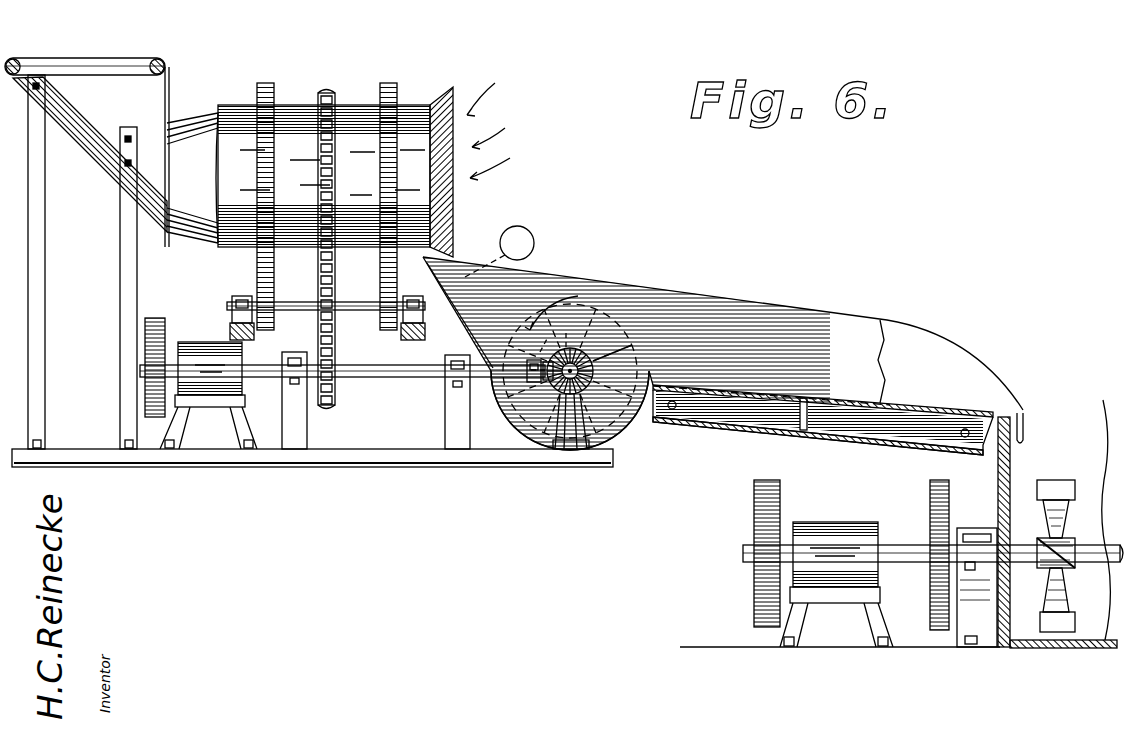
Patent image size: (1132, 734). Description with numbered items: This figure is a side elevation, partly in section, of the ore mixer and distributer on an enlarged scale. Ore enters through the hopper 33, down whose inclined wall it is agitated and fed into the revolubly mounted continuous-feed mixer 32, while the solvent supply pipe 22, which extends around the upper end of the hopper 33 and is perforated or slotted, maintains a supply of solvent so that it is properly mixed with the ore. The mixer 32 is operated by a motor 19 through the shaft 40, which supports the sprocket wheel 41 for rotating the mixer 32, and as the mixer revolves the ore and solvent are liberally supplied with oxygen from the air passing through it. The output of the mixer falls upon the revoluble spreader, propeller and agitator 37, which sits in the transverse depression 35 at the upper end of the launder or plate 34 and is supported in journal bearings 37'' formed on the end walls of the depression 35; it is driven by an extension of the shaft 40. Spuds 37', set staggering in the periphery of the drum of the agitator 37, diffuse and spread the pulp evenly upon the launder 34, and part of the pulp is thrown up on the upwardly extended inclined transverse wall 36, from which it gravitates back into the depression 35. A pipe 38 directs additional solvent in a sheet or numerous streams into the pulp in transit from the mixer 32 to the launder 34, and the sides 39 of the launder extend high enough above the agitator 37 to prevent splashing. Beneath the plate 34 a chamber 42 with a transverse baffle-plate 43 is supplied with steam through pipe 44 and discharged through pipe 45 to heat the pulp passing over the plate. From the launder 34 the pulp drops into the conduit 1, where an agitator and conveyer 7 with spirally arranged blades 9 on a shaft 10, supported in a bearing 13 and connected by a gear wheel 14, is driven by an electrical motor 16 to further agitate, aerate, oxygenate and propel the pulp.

The conduit 1 is at (1087, 414).
The agitator and conveyer 7 is at (1068, 541).
The vanes or blades 9 is at (1058, 481).
The shaft 10 is at (1026, 567).
The bearing 13 is at (976, 523).
The gear wheel 14 is at (922, 532).
The electrical motor 16 is at (841, 519).
The motor 19 is at (214, 340).
The solvent supply pipe 22 is at (76, 60).
The continuous-feed mixer 32 is at (233, 243).
The hopper 33 is at (168, 98).
The launder or plate 34 is at (922, 402).
The transverse depression 35 is at (614, 418).
The inclined transverse wall 36 is at (461, 322).
The spreader, propeller and agitator 37 is at (570, 339).
The spuds 37' is at (640, 304).
The journal bearings 37'' is at (553, 448).
The pipe 38 is at (526, 232).
The sides 39 is at (742, 312).
The shaft 40 is at (392, 372).
The sprocket wheel 41 is at (338, 298).
The chamber 42 is at (754, 418).
The transverse baffle-plate 43 is at (797, 418).
The steam supply pipe 44 is at (965, 440).
The discharge pipe 45 is at (672, 413).